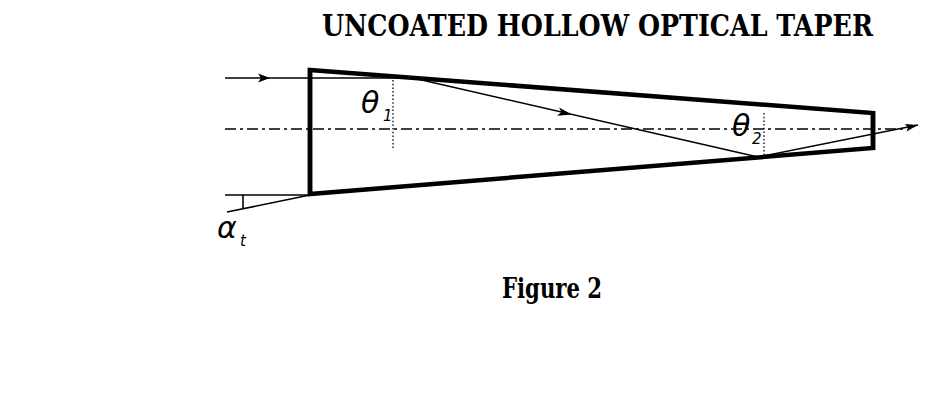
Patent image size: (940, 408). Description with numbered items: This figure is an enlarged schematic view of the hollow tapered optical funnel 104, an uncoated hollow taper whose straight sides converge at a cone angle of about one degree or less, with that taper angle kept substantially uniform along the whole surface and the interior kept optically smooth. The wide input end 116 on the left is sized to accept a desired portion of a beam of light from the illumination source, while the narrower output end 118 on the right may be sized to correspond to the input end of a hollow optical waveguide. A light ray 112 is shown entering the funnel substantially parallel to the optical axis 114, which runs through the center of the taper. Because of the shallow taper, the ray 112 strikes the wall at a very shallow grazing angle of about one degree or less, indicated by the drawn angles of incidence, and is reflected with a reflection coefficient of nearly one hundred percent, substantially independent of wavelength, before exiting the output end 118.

The hollow tapered optical funnel 104 is at (577, 174).
The light ray 112 is at (228, 77).
The optical axis 114 is at (228, 129).
The input end 116 is at (310, 162).
The output end 118 is at (877, 114).